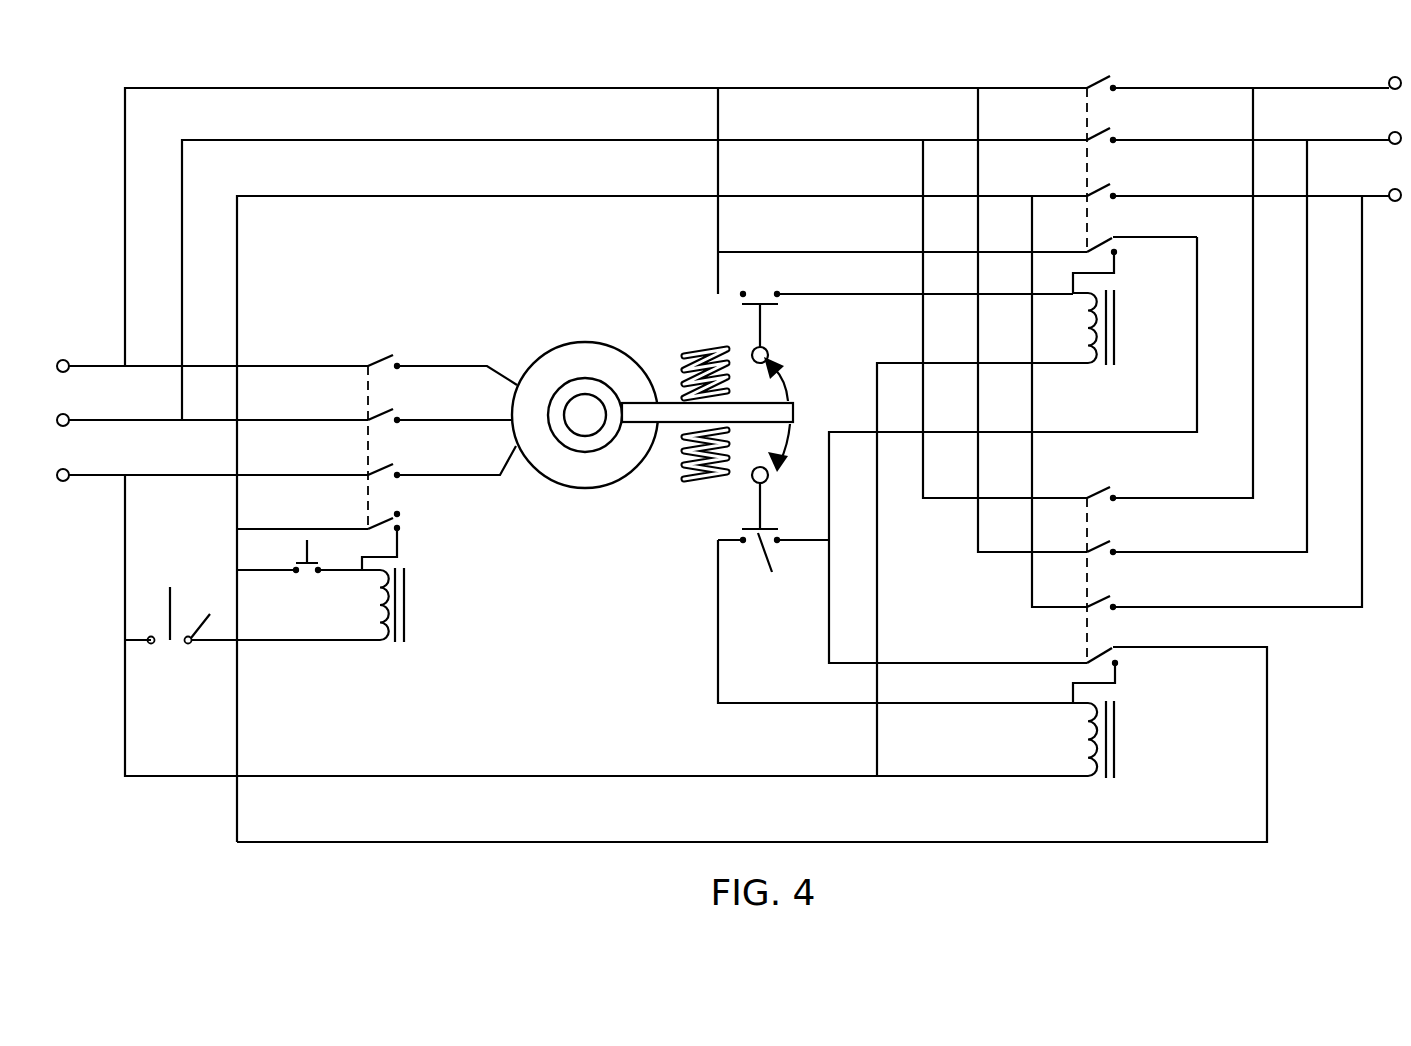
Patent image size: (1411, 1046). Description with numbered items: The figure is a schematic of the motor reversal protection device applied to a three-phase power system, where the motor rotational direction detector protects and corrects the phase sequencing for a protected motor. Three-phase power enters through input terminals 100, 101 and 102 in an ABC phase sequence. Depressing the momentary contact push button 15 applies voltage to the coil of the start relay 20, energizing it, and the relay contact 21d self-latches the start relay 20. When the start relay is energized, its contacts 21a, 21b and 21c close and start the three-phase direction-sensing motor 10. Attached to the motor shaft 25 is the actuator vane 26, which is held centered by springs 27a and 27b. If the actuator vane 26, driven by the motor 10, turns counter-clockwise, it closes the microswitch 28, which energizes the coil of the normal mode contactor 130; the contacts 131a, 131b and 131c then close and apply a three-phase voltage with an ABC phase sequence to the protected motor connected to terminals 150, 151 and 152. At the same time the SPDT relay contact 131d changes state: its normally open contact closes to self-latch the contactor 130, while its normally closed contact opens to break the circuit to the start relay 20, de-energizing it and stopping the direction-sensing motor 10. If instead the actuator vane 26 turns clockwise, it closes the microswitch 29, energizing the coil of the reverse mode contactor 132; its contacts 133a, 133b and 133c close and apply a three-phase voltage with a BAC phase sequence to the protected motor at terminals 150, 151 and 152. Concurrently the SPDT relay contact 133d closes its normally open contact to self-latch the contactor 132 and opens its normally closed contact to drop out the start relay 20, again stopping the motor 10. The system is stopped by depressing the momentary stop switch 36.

The direction-sensing motor 10 is at (552, 347).
The momentary contact push button 15 is at (300, 551).
The start relay 20 is at (395, 644).
The relay contact 21a is at (352, 360).
The relay contact 21b is at (352, 413).
The relay contact 21c is at (352, 467).
The relay contact 21d is at (352, 523).
The motor shaft 25 is at (583, 423).
The actuator vane 26 is at (795, 402).
The spring 27a is at (688, 345).
The spring 27b is at (700, 484).
The microswitch 28 is at (762, 322).
The microswitch 29 is at (766, 560).
The momentary stop switch 36 is at (199, 628).
The input terminal 100 is at (69, 357).
The input terminal 101 is at (68, 415).
The input terminal 102 is at (65, 482).
The normal mode contactor 130 is at (1102, 366).
The contactor contact 131a is at (1085, 86).
The contactor contact 131b is at (1085, 138).
The contactor contact 131c is at (1085, 194).
The SPDT relay contact 131d is at (1114, 239).
The reverse mode contactor 132 is at (1100, 780).
The contactor contact 133a is at (1116, 496).
The contactor contact 133b is at (1116, 551).
The contactor contact 133c is at (1116, 606).
The SPDT relay contact 133d is at (1085, 662).
The terminal 150 is at (1390, 78).
The terminal 151 is at (1390, 135).
The terminal 152 is at (1390, 190).